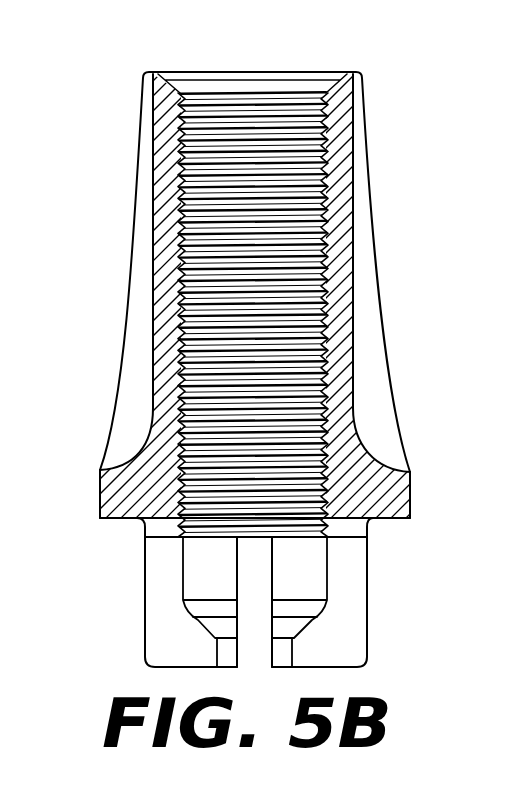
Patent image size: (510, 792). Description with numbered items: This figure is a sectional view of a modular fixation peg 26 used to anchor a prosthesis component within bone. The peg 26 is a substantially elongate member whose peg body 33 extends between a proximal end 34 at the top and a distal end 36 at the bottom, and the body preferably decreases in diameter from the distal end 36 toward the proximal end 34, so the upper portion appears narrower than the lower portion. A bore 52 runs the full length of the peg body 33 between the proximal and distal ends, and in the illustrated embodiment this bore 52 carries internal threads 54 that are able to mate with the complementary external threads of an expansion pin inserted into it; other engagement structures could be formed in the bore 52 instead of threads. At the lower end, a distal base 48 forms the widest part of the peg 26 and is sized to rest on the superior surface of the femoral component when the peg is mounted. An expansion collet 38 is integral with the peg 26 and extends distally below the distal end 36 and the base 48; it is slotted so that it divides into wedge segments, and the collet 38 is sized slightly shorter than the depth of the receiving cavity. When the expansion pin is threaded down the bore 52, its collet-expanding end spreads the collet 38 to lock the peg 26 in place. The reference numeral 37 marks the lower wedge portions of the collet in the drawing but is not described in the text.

The fixation peg 26 is at (391, 218).
The peg body 33 is at (127, 293).
The proximal end 34 is at (141, 93).
The distal end 36 is at (411, 484).
The legs 37 is at (184, 651).
The expansion collet 38 is at (367, 584).
The distal base 48 is at (383, 519).
The bore 52 is at (262, 87).
The internal threads 54 is at (297, 181).